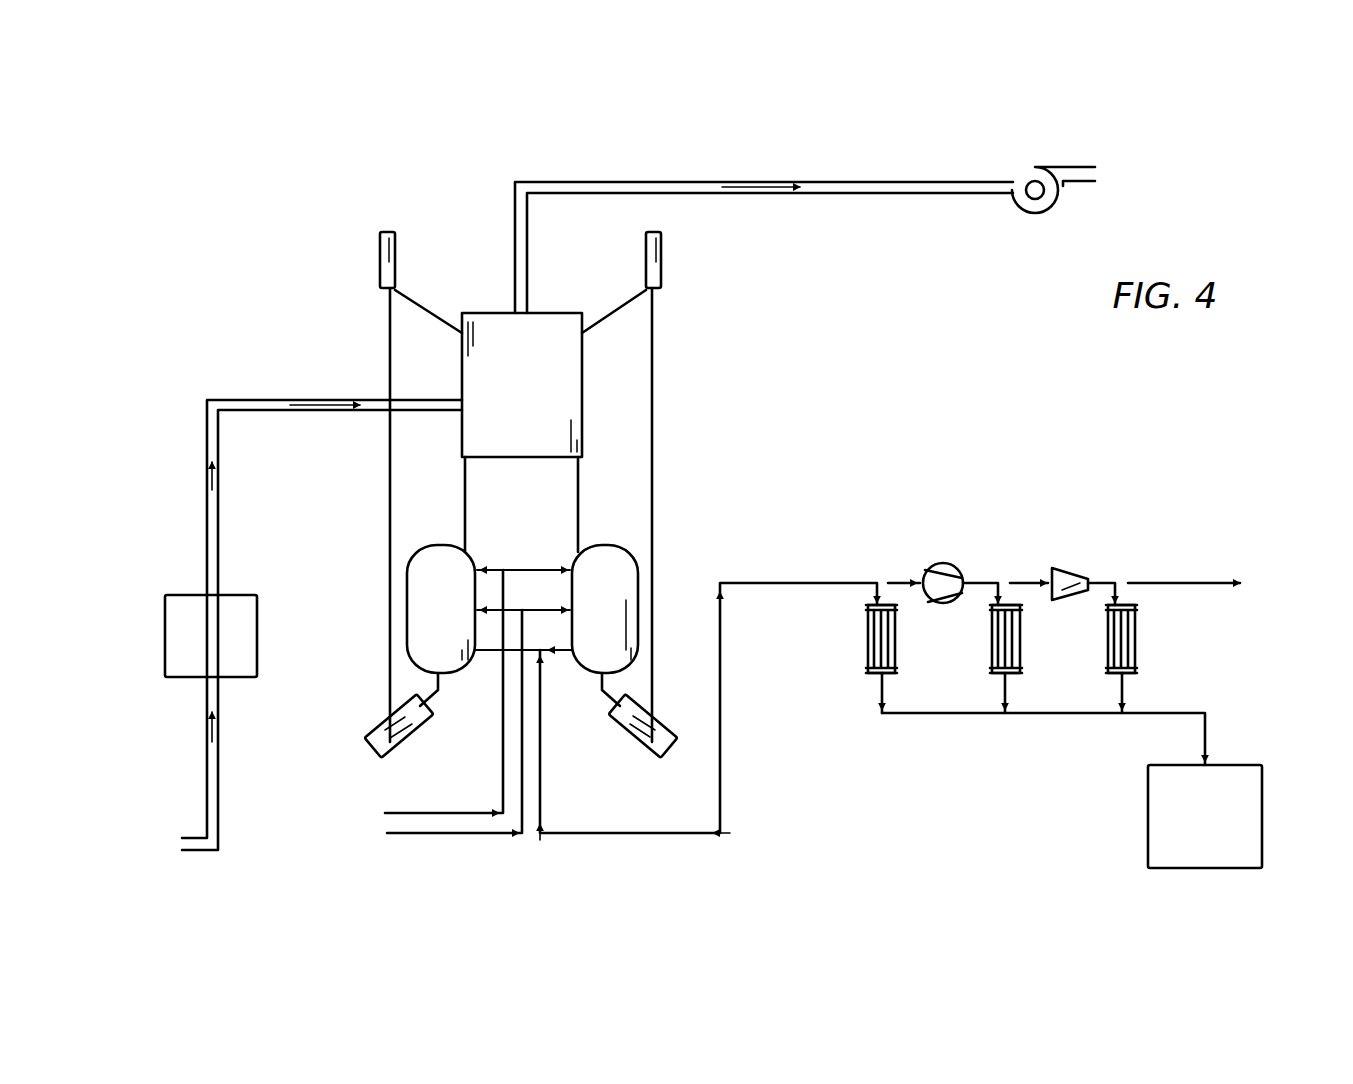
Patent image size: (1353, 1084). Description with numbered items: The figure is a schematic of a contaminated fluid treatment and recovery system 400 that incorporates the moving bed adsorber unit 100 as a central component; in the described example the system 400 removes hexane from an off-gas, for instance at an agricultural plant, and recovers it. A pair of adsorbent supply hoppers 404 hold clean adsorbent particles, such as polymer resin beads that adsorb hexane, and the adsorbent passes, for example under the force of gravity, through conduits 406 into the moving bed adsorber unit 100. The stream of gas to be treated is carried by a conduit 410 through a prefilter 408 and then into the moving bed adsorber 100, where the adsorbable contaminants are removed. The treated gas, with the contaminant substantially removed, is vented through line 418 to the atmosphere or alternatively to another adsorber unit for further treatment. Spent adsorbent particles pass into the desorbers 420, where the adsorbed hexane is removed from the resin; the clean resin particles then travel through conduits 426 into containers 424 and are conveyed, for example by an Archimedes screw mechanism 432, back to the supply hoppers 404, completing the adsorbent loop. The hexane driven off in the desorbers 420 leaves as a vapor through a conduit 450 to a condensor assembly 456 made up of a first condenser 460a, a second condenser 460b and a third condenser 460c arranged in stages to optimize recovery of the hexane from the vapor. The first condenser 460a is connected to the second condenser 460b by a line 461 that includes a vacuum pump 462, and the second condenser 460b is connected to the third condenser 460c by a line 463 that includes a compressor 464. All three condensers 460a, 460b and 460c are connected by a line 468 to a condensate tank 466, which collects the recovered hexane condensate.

The moving bed adsorber unit 100 is at (603, 430).
The contaminated fluid treatment and recovery system 400 is at (966, 426).
The adsorbent supply hoppers 404 is at (382, 246).
The conduits 406 is at (428, 313).
The prefilter 408 is at (186, 594).
The conduit 410 is at (228, 400).
The line 418 is at (750, 182).
The desorbers 420 is at (416, 577).
The containers 424 is at (376, 748).
The conduits 426 is at (440, 693).
The Archimedes screw mechanism 432 is at (388, 524).
The conduit 450 is at (800, 583).
The condensor assembly 456 is at (1050, 556).
The first condenser 460a is at (868, 676).
The second condenser 460b is at (993, 675).
The third condenser 460c is at (1136, 637).
The line 461 is at (898, 582).
The vacuum pump 462 is at (948, 566).
The line 463 is at (1093, 578).
The compressor 464 is at (1067, 601).
The condensate tank 466 is at (1147, 848).
The line 468 is at (1028, 715).